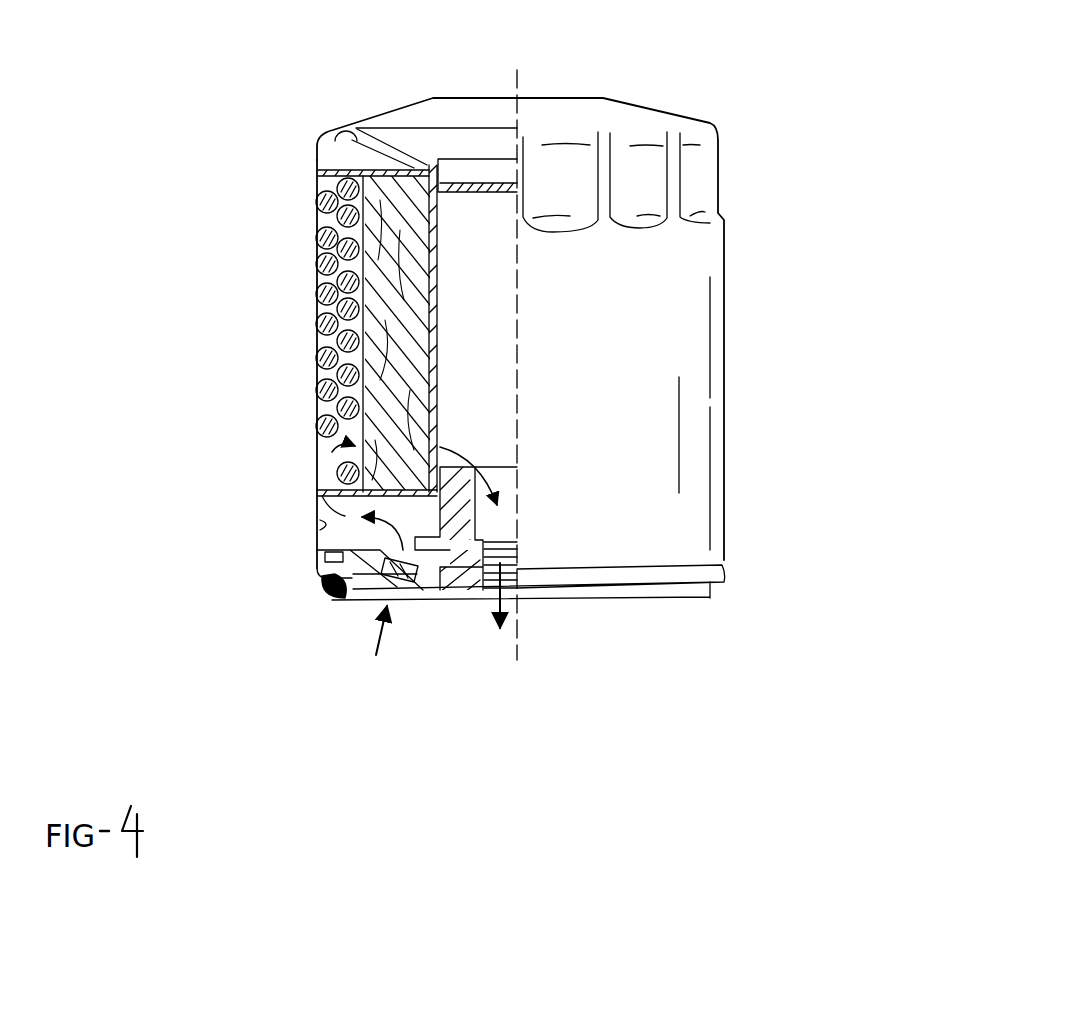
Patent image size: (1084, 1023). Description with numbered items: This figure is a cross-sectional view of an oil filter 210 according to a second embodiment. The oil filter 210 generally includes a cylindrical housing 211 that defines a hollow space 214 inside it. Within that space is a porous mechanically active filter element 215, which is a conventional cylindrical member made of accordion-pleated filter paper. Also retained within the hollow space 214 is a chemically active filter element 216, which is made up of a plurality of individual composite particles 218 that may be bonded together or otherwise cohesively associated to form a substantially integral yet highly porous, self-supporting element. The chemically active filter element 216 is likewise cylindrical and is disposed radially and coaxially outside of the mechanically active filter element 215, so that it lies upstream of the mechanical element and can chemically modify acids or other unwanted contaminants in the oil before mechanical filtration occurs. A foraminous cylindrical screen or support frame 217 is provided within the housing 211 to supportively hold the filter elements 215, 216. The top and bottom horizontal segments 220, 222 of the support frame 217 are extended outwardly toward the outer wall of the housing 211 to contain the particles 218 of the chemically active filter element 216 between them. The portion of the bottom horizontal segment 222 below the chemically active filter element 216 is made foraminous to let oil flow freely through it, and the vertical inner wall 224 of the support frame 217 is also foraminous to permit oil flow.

The oil filter 210 is at (777, 139).
The cylindrical housing 211 is at (606, 386).
The hollow space 214 is at (320, 533).
The mechanically active filter element 215 is at (412, 212).
The chemically active filter element 216 is at (313, 344).
The support frame 217 is at (367, 163).
The composite particles 218 is at (320, 402).
The top horizontal segment 220 is at (345, 164).
The bottom horizontal segment 222 is at (425, 494).
The vertical inner wall 224 is at (440, 312).